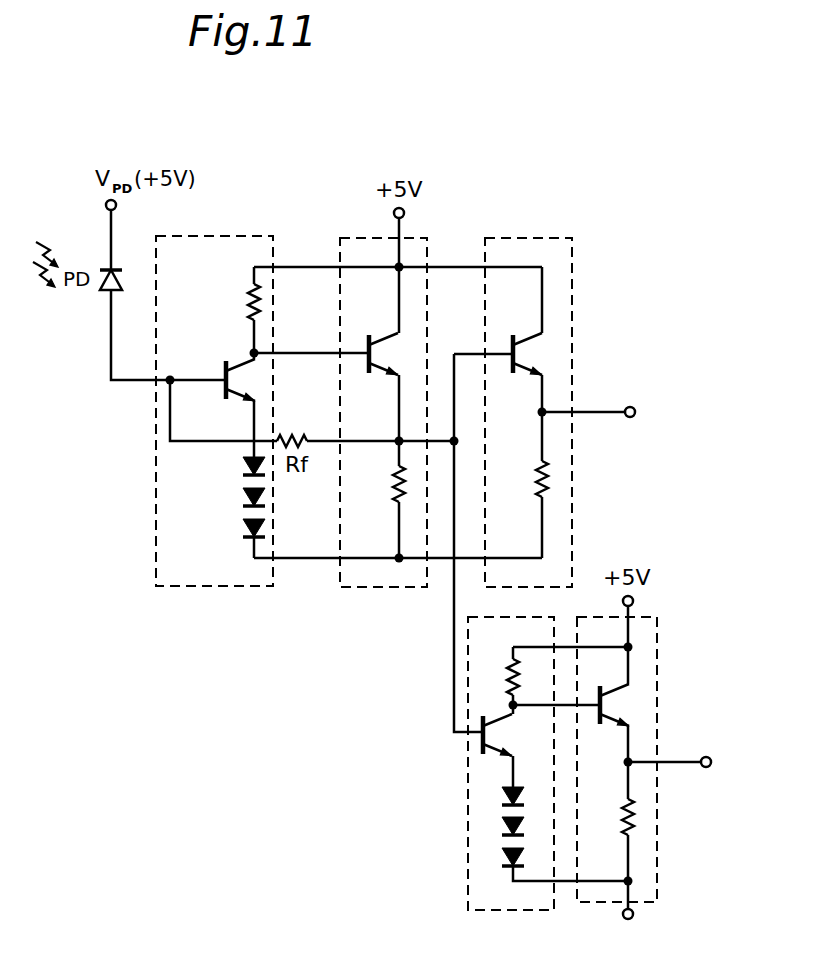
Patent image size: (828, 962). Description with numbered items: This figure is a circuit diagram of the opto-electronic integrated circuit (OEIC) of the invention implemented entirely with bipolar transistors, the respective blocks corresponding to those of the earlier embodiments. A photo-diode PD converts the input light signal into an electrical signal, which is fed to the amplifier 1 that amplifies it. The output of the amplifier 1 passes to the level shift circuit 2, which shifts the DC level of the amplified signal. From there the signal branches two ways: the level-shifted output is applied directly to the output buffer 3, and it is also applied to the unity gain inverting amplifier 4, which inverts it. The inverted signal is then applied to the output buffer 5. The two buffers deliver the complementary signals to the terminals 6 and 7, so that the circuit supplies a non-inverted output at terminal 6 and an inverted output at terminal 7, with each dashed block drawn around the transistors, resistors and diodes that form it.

The amplifier 1 is at (221, 236).
The level shift circuit 2 is at (367, 235).
The output buffer 3 is at (535, 235).
The unity gain inverting amplifier 4 is at (468, 822).
The output buffer 5 is at (658, 690).
The first output terminal 6 is at (636, 407).
The second output terminal 7 is at (712, 757).